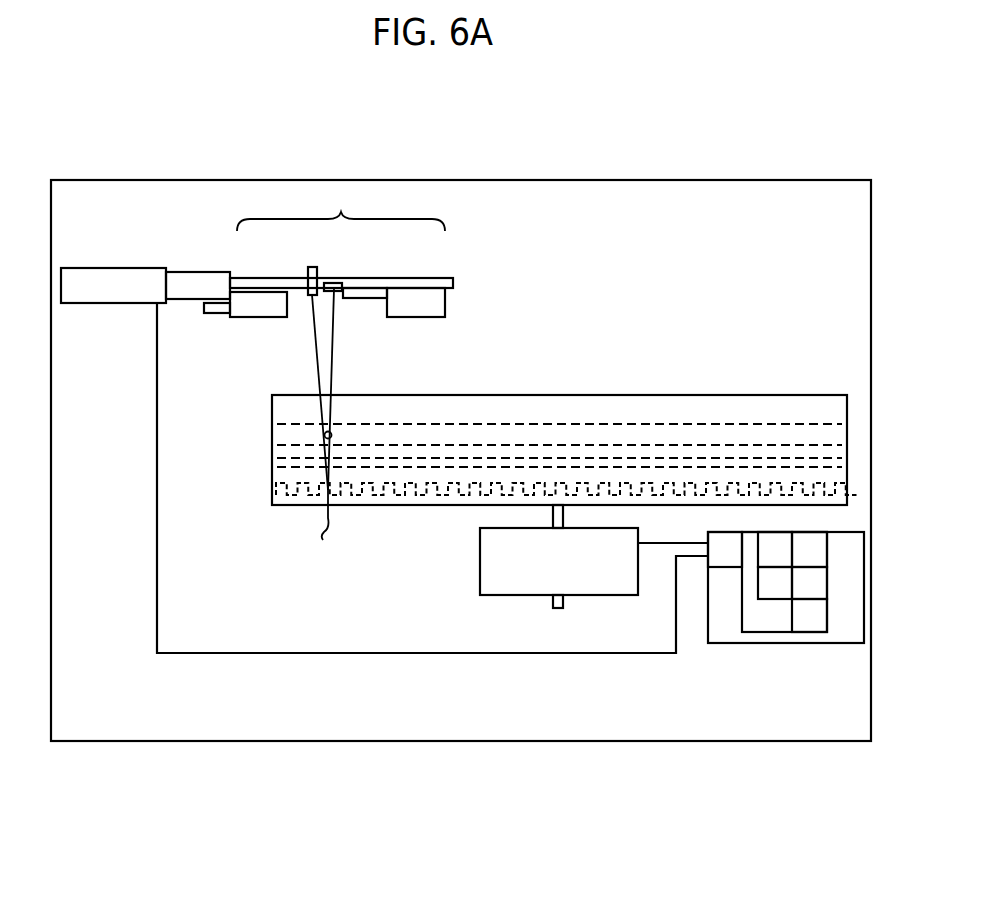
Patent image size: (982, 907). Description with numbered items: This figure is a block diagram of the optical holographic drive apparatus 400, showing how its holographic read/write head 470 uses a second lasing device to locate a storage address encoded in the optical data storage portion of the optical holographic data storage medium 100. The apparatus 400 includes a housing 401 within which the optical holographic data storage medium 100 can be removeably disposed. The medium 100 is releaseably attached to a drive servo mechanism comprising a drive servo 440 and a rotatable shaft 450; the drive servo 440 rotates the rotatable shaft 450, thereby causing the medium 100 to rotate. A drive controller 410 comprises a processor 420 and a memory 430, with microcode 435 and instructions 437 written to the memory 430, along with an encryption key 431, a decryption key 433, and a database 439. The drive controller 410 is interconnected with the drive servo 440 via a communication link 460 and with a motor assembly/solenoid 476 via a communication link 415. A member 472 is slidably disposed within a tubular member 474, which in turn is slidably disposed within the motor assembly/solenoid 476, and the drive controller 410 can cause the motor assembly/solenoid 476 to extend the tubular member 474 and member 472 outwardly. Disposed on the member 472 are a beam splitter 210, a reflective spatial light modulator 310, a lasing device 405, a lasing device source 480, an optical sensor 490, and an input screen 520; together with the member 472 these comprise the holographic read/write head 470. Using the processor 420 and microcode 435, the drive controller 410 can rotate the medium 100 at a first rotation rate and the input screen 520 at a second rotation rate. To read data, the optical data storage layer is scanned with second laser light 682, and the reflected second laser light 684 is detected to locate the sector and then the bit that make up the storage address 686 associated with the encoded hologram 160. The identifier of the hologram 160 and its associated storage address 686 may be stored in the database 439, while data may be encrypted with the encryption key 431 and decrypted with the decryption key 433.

The optical holographic data storage medium 100 is at (622, 392).
The encoded hologram 160 is at (332, 433).
The beam splitter 210 is at (270, 311).
The reflective spatial light modulator 310 is at (359, 292).
The optical holographic drive apparatus 400 is at (409, 754).
The housing 401 is at (569, 742).
The lasing device 405 is at (212, 313).
The drive controller 410 is at (785, 644).
The communication link 415 is at (530, 655).
The processor 420 is at (725, 549).
The memory 430 is at (739, 611).
The encryption key 431 is at (775, 549).
The decryption key 433 is at (809, 549).
The microcode 435 is at (775, 583).
The instructions 437 is at (809, 583).
The database 439 is at (809, 615).
The drive servo 440 is at (575, 573).
The rotatable shaft 450 is at (552, 517).
The communication link 460 is at (651, 542).
The holographic read/write head 470 is at (341, 210).
The member 472 is at (453, 281).
The tubular member 474 is at (212, 298).
The motor assembly/solenoid 476 is at (128, 296).
The lasing device source 480 is at (308, 269).
The optical sensor 490 is at (333, 283).
The input screen 520 is at (427, 311).
The second laser light 682 is at (316, 350).
The reflected second laser light 684 is at (334, 348).
The storage address 686 is at (326, 525).